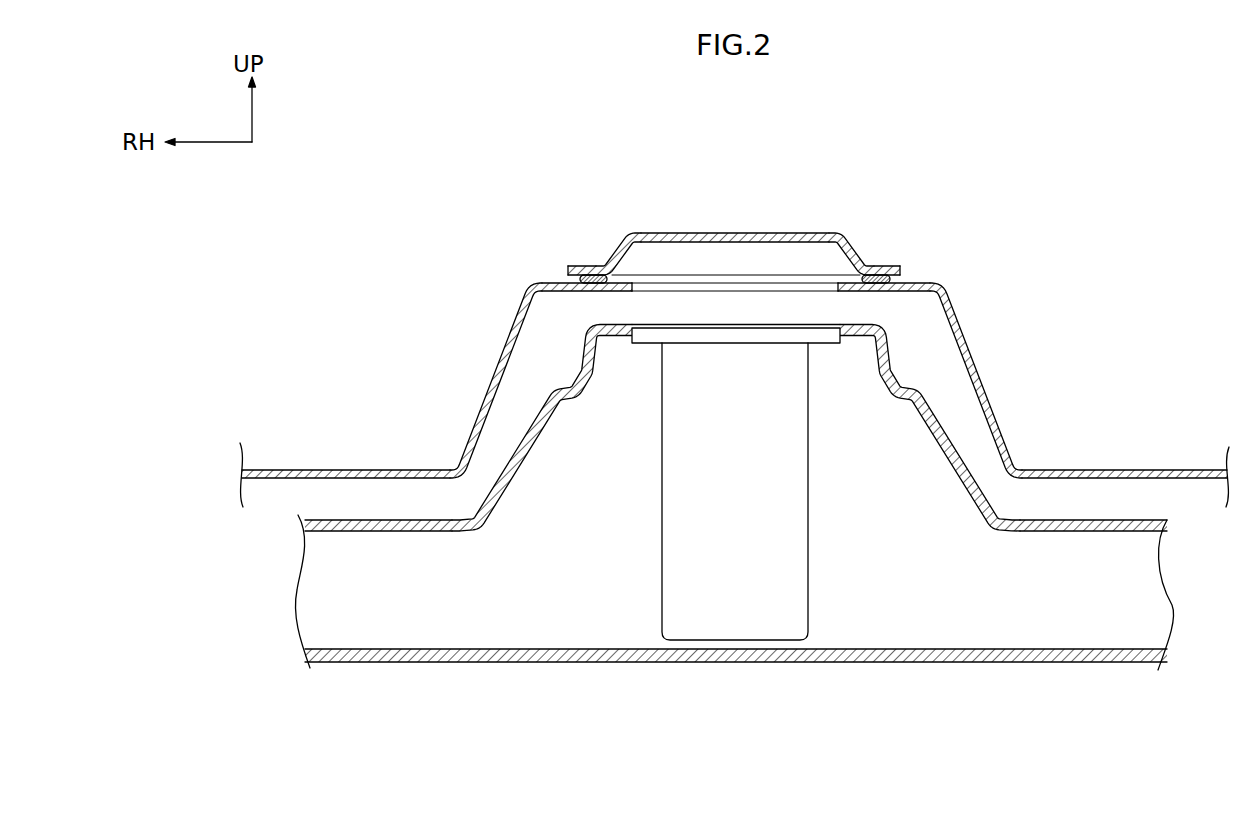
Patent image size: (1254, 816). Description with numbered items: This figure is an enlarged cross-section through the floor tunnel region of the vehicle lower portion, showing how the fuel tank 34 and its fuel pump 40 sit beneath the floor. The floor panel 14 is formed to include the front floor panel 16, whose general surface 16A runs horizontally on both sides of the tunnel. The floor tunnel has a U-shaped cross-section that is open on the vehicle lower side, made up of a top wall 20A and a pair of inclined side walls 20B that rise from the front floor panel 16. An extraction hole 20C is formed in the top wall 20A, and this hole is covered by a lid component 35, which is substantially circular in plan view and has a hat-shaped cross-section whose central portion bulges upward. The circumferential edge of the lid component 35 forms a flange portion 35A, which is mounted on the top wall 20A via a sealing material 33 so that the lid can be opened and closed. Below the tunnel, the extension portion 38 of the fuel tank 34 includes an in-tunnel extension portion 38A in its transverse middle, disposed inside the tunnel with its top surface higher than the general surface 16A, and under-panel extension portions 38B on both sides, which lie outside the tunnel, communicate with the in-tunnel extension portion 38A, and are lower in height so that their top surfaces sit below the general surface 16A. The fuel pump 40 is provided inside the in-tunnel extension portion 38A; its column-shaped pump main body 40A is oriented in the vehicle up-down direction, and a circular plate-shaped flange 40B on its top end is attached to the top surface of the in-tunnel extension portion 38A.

The floor panel 14 is at (313, 411).
The front floor panel 16 is at (313, 411).
The general surface of the front floor panel 16A is at (273, 468).
The top wall 20A is at (905, 283).
The side walls 20B is at (492, 363).
The extraction hole 20C is at (630, 283).
The sealing material 33 is at (573, 277).
The fuel tank 34 is at (736, 709).
The lid component 35 is at (775, 226).
The flange portion 35A is at (892, 265).
The extension portion 38 is at (931, 672).
The in-tunnel extension portion 38A is at (960, 455).
The under-panel extension portions 38B is at (377, 517).
The fuel pump 40 is at (730, 446).
The pump main body 40A is at (810, 540).
The flange 40B is at (713, 325).